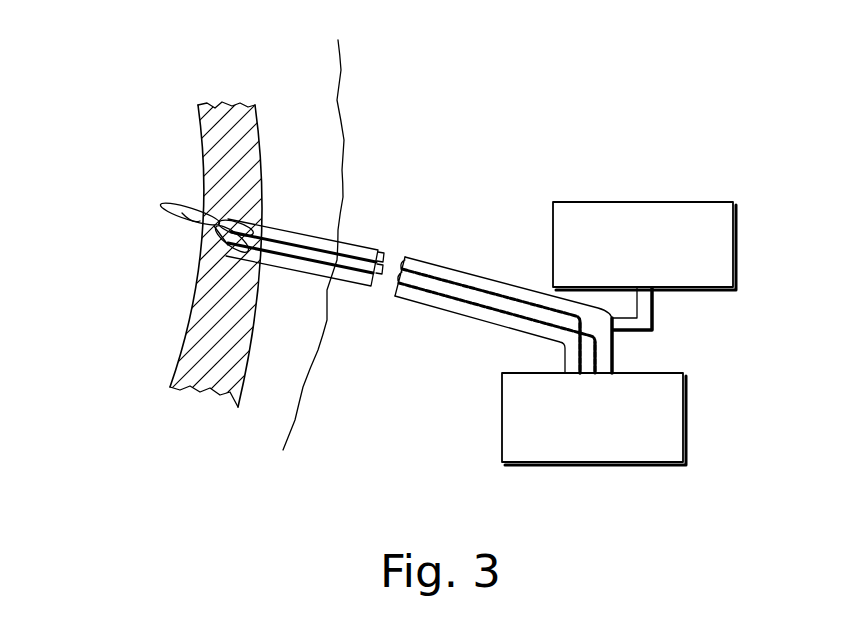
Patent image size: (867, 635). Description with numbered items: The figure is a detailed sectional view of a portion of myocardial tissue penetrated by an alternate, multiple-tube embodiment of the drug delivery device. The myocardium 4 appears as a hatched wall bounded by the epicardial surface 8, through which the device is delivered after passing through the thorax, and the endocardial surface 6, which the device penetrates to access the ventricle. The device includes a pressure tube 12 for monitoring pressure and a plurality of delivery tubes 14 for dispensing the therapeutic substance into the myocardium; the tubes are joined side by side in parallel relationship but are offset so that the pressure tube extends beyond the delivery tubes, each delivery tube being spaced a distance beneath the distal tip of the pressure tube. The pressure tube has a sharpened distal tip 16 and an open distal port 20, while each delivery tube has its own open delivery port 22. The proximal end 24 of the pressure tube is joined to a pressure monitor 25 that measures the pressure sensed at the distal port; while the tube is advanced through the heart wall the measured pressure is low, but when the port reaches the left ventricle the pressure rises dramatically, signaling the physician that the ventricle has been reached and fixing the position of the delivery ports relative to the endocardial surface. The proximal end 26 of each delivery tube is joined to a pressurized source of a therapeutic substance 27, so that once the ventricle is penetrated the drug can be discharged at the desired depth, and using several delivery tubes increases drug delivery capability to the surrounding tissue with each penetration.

The myocardium 4 is at (232, 106).
The endocardial surface 6 is at (199, 108).
The epicardial surface 8 is at (263, 141).
The pressure tube 12 is at (195, 226).
The delivery tube 14 is at (312, 243).
The sharpened distal tip 16 is at (182, 213).
The open distal port 20 is at (193, 228).
The delivery port 22 is at (210, 218).
The proximal end of pressure tube 24 is at (405, 256).
The pressure monitor 25 is at (670, 202).
The proximal end of delivery tube 26 is at (672, 360).
The pressurized source of therapeutic substance 27 is at (612, 462).